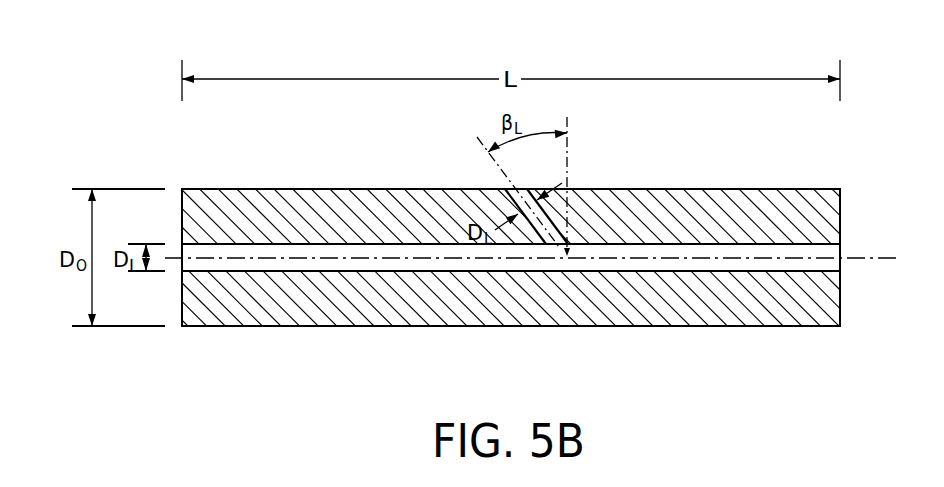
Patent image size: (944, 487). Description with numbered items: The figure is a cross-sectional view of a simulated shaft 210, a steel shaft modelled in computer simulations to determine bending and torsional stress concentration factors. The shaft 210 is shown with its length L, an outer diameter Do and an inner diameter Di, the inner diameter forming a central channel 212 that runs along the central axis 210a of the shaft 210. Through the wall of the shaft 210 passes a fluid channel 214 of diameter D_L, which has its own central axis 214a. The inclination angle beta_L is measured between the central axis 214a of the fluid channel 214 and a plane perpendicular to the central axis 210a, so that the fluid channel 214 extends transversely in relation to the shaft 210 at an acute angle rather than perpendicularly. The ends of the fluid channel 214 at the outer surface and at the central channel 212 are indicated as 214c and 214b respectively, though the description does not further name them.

The simulated shaft 210 is at (113, 113).
The central axis of the shaft 210a is at (258, 257).
The central channel 212 is at (303, 245).
The fluid channel 214 is at (593, 218).
The central axis of the fluid channel 214a is at (472, 137).
The hole outlet 214b is at (550, 244).
The hole inlet 214c is at (505, 189).